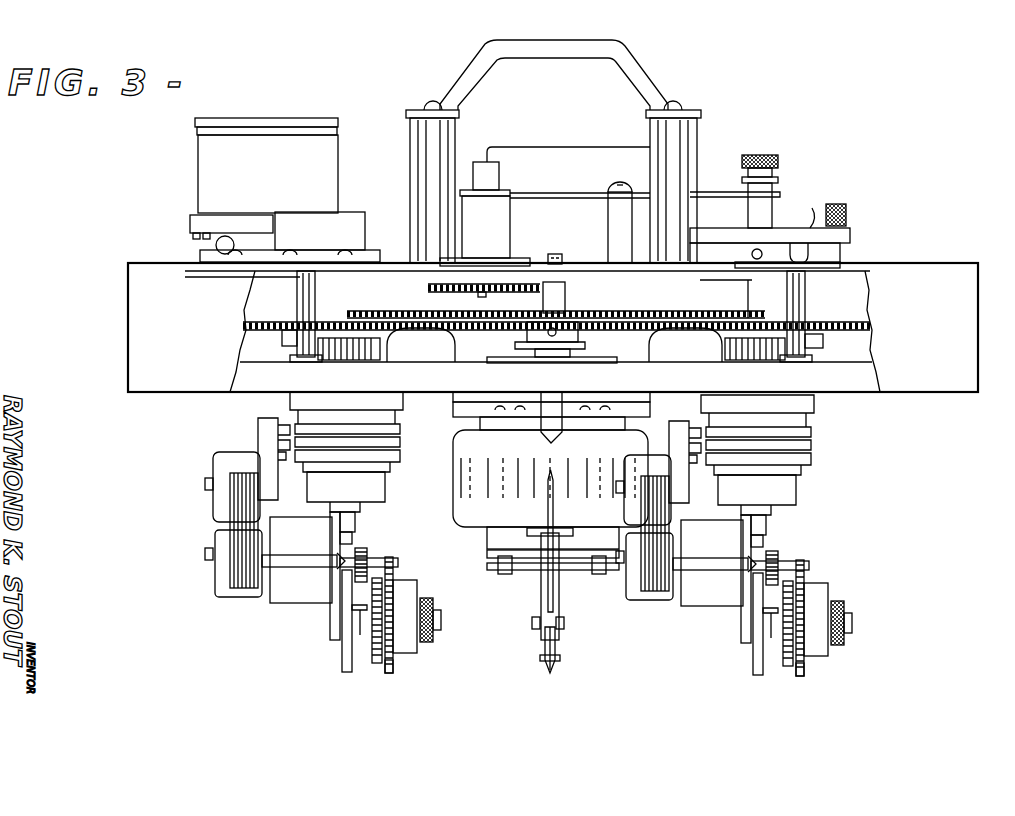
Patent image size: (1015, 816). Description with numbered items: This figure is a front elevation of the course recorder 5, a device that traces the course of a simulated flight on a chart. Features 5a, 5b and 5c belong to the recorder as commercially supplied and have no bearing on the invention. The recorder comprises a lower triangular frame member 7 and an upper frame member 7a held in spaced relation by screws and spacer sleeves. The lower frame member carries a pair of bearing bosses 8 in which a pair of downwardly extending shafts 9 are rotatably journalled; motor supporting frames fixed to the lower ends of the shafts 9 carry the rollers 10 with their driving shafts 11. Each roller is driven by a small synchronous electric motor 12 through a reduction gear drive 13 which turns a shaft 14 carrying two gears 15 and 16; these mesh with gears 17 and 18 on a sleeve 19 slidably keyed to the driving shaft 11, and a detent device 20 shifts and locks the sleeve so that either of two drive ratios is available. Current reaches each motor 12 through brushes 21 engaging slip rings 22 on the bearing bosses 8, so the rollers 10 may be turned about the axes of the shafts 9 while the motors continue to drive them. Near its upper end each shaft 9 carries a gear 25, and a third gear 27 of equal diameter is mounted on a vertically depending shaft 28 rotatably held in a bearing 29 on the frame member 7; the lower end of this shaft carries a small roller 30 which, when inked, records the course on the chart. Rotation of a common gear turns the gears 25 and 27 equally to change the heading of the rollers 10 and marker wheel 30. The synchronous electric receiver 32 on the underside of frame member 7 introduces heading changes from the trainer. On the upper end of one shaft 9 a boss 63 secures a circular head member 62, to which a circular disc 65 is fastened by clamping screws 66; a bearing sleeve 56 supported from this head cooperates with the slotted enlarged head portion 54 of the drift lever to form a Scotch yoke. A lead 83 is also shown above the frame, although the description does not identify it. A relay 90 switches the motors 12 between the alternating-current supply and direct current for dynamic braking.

The course recorder 5 is at (911, 258).
The recorder feature 5a is at (652, 74).
The recorder feature 5b is at (466, 508).
The recorder feature 5c is at (592, 258).
The lower triangular base or frame member 7 is at (858, 390).
The upper base or frame member 7a is at (378, 268).
The bearing boss 8 is at (385, 492).
The downwardly extending shaft 9 is at (752, 296).
The roller 10 is at (342, 654).
The roller driving shaft 11 is at (361, 626).
The synchronous electric motor 12 is at (240, 598).
The reduction gear drive 13 is at (280, 605).
The shaft 14 is at (363, 563).
The gear 15 is at (360, 552).
The gear 16 is at (393, 570).
The gear 17 is at (378, 665).
The gear 18 is at (394, 666).
The sleeve 19 is at (408, 590).
The detent device 20 is at (441, 620).
The brush 21 is at (278, 424).
The slip ring 22 is at (405, 432).
The gear 25 is at (256, 322).
The third gear 27 is at (664, 298).
The vertically depending shaft 28 is at (565, 300).
The bearing 29 is at (548, 355).
The small roller 30 is at (560, 656).
The synchronous electric receiver 32 is at (484, 538).
The enlarged head portion 54 is at (782, 196).
The bearing sleeve 56 is at (748, 213).
The circular head member 62 is at (808, 247).
The boss 63 is at (728, 255).
The circular disc 65 is at (800, 215).
The clamping screw 66 is at (848, 206).
The wire 83 is at (552, 152).
The relay 90 is at (310, 120).